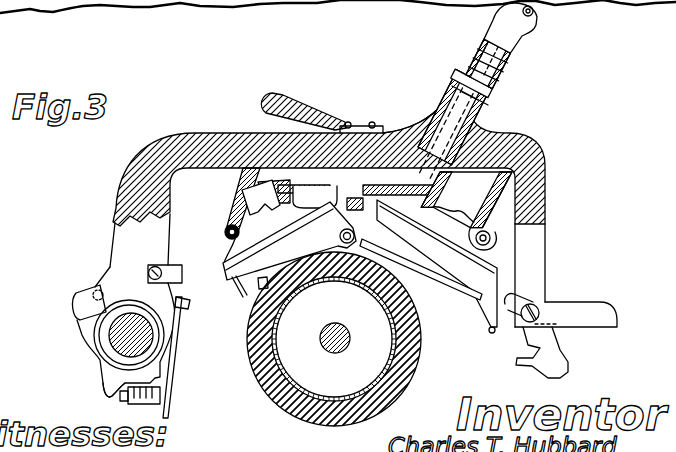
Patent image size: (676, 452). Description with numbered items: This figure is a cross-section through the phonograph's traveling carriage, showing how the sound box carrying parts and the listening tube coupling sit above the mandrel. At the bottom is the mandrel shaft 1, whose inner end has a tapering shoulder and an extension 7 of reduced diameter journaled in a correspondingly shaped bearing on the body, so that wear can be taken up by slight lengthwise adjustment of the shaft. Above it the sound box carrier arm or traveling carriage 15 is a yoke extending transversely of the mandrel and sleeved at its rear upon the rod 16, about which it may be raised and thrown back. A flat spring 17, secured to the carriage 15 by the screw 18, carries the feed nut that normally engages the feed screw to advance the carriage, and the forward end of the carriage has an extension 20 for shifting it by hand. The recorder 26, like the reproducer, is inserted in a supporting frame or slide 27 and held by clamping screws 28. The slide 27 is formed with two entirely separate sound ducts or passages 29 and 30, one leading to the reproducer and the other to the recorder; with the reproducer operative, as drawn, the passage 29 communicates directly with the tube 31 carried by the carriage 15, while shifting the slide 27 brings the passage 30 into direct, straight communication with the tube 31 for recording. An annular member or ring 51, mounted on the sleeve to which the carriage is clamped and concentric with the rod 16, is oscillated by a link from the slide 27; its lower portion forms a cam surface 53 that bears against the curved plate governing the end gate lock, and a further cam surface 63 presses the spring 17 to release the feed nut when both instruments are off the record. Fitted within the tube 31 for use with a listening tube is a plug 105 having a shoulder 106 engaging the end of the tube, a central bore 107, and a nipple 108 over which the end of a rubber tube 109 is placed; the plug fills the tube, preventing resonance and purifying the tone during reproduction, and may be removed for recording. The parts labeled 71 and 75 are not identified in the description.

The mandrel shaft 1 is at (332, 328).
The extension of reduced diameter 7 is at (361, 277).
The traveling carriage 15 is at (219, 133).
The guide rod 16 is at (117, 347).
The flat spring 17 is at (165, 393).
The screw 18 is at (184, 308).
The extension 20 is at (612, 325).
The recorder 26 is at (479, 272).
The supporting frame or slide 27 is at (243, 181).
The clamping screws 28 is at (225, 232).
The sound passage 29 is at (380, 173).
The sound passage 30 is at (480, 180).
The tube 31 is at (446, 92).
The annular member 51 is at (142, 296).
The cam surface 53 is at (106, 396).
The cam surface 63 is at (170, 362).
The catch 71 is at (570, 360).
The brake bar 75 is at (243, 257).
The plug 105 is at (486, 106).
The shoulder 106 is at (494, 94).
The central bore 107 is at (486, 100).
The nipple 108 is at (512, 57).
The rubber tube 109 is at (517, 23).